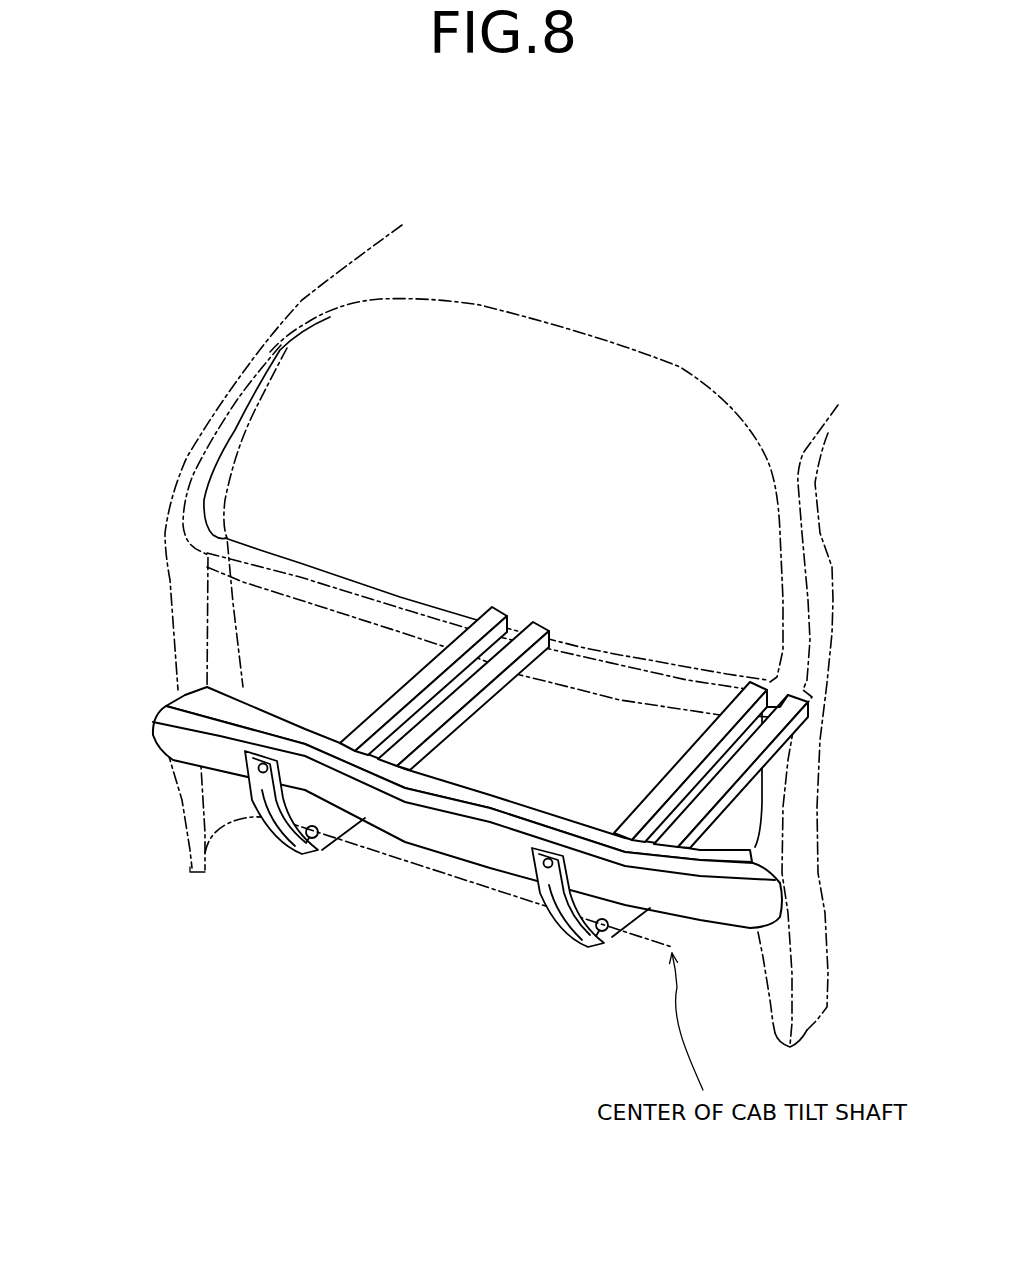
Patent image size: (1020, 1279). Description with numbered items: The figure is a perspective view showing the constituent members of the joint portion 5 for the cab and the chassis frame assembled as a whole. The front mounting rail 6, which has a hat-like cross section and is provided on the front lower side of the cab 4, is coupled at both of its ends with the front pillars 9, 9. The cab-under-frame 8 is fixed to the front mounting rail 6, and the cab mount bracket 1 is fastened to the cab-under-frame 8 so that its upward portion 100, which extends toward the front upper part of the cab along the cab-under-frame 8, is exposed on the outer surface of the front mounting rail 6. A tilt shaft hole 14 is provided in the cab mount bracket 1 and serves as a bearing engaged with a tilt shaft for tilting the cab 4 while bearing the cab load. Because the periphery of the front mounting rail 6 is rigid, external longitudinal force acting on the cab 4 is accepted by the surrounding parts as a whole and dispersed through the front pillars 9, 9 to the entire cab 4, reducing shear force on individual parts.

The cab mounting bracket 1 is at (281, 868).
The cab 4 is at (588, 227).
The joint portion 5 is at (272, 948).
The front mounting rail 6 is at (173, 733).
The cab-under-frame 8 is at (423, 680).
The front pillar 9 is at (195, 597).
The tilt shaft hole 14 is at (320, 848).
The upward portion 100 is at (262, 795).